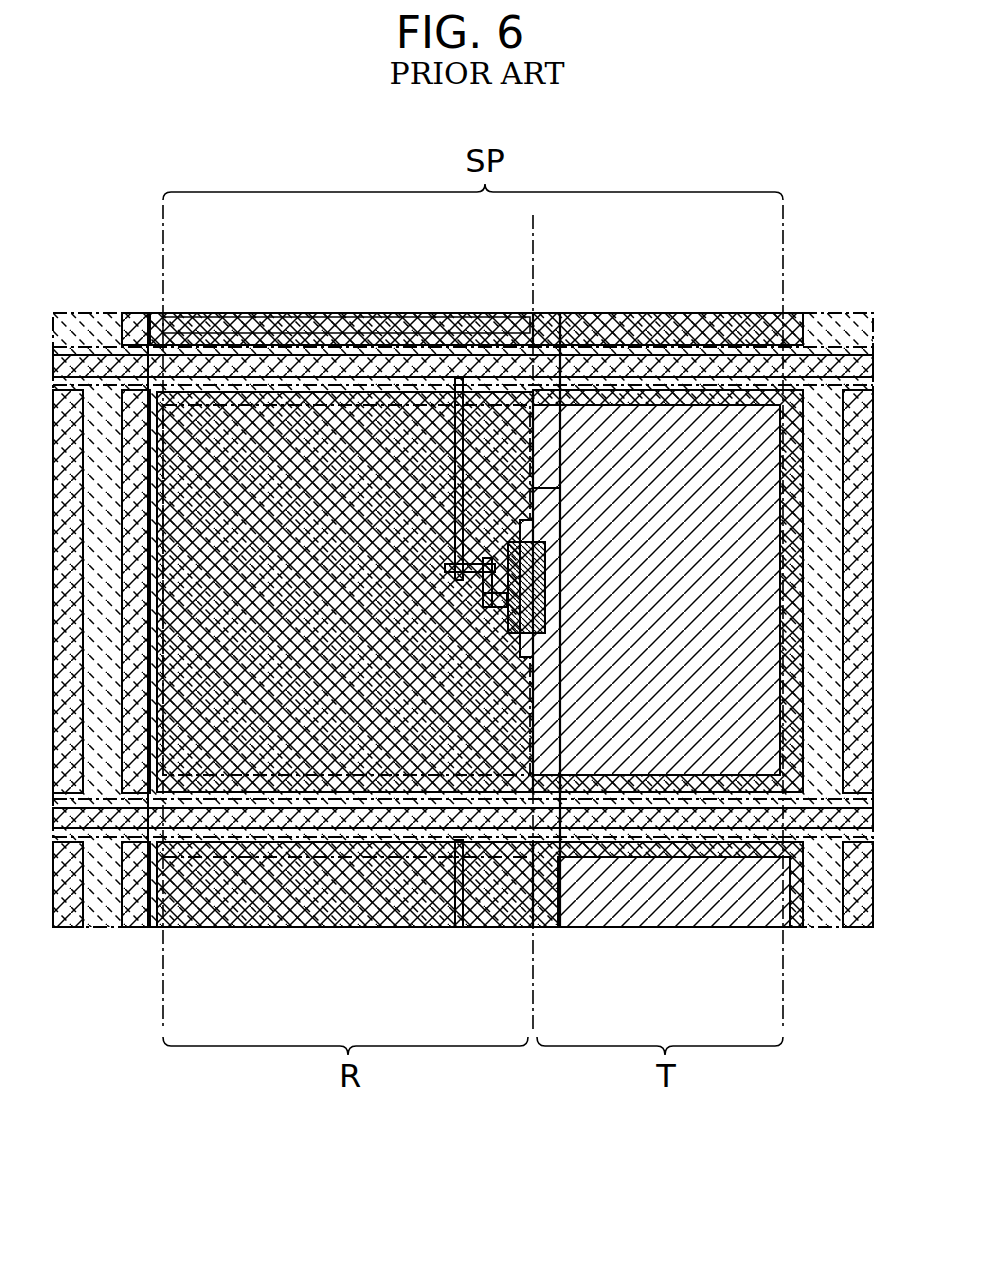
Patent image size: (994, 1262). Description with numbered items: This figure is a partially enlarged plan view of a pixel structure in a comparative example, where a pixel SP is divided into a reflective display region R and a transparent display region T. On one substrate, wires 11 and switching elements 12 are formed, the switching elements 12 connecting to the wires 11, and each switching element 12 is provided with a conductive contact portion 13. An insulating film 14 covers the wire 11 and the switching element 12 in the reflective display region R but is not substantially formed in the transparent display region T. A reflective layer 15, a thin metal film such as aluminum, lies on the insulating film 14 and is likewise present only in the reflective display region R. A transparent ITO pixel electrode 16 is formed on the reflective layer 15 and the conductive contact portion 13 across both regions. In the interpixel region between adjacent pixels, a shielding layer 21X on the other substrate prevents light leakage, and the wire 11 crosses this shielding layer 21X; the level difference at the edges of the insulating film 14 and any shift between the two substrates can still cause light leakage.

The wire 11 is at (615, 360).
The switching element 12 is at (484, 455).
The conductive contact portion 13 is at (545, 578).
The insulating film 14 is at (553, 435).
The reflective layer 15 is at (557, 488).
The pixel electrode 16 is at (740, 395).
The shielding layer 21X is at (207, 468).